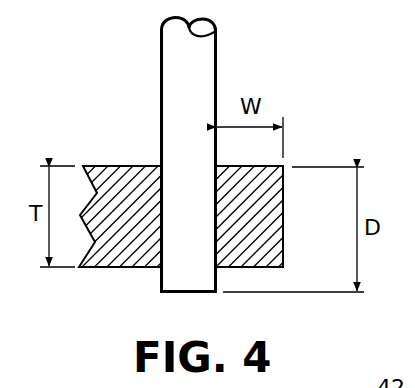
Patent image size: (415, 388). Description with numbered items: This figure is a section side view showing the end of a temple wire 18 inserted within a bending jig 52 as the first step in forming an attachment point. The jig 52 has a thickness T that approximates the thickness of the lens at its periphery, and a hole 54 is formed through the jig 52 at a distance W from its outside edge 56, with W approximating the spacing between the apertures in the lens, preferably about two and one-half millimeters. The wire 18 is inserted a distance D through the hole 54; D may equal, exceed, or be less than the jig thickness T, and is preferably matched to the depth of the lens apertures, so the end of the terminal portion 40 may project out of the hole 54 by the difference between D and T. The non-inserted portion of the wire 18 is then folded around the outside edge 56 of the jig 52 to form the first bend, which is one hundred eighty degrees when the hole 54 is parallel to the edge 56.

The temple wire 18 is at (161, 165).
The jig 52 is at (190, 174).
The hole 54 is at (162, 184).
The edge 56 is at (284, 216).
The terminal portion 40 is at (182, 294).